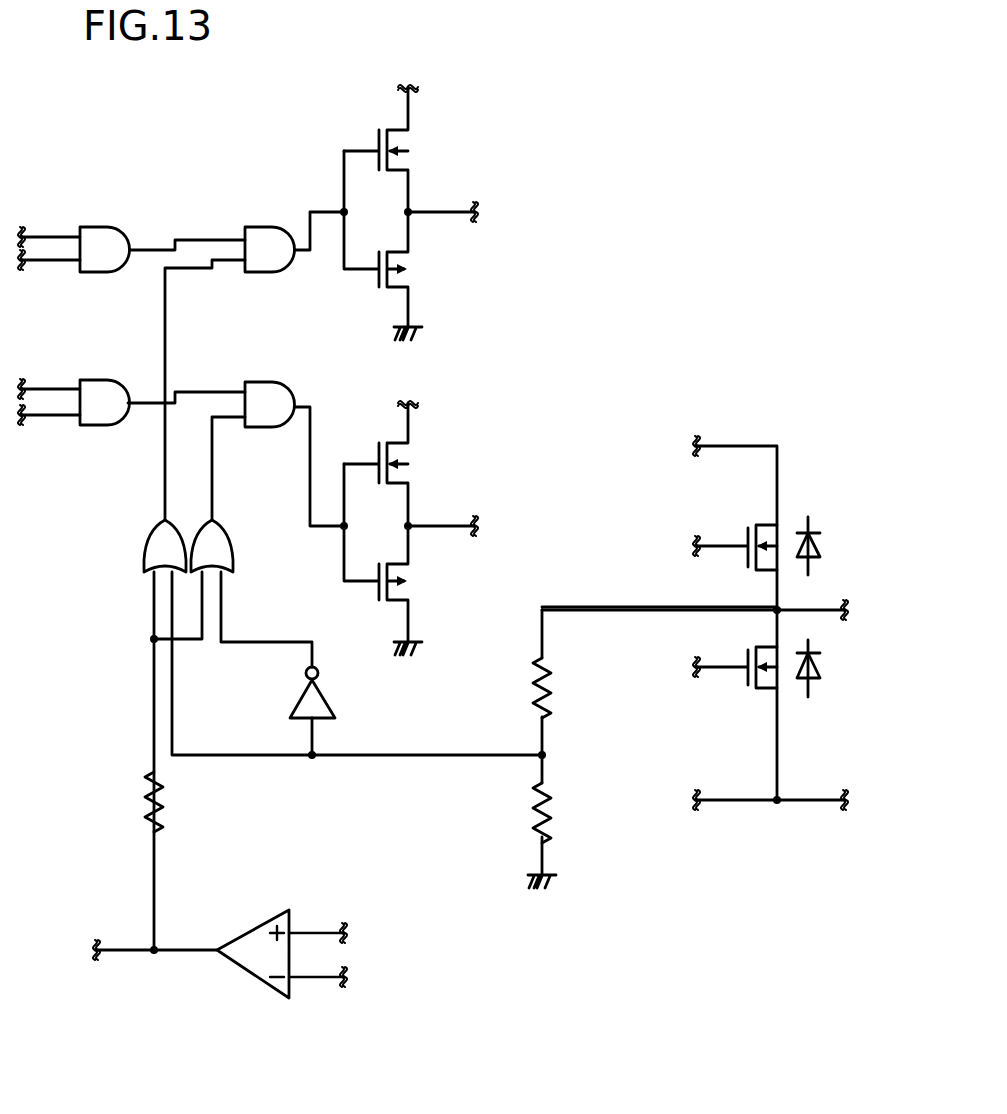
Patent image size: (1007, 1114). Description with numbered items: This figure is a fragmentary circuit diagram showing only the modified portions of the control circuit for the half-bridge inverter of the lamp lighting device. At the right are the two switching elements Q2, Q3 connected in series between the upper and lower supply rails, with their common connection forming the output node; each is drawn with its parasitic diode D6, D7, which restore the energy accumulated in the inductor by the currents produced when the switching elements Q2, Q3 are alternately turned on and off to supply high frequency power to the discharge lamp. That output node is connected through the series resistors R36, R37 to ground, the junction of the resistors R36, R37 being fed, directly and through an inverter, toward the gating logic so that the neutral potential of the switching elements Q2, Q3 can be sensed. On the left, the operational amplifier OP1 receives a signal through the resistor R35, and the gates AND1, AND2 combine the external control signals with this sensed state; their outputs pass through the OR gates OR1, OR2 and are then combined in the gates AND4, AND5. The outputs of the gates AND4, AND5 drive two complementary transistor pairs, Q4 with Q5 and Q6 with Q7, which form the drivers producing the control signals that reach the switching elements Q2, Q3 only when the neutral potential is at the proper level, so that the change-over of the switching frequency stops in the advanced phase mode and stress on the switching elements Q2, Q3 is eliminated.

The AND gate AND1 is at (115, 231).
The AND gate AND2 is at (110, 379).
The AND gate AND4 is at (256, 231).
The AND gate AND5 is at (267, 381).
The OR gate OR1 is at (133, 546).
The OR gate OR2 is at (244, 546).
The switching element Q2 is at (735, 528).
The switching element Q3 is at (735, 690).
The transistor Q4 is at (404, 148).
The transistor Q5 is at (404, 245).
The transistor Q6 is at (406, 463).
The transistor Q7 is at (406, 559).
The parasitic diode D6 is at (832, 546).
The parasitic diode D7 is at (832, 668).
The resistor R35 is at (187, 803).
The resistor R36 is at (578, 690).
The resistor R37 is at (577, 813).
The operational amplifier OP1 is at (282, 977).